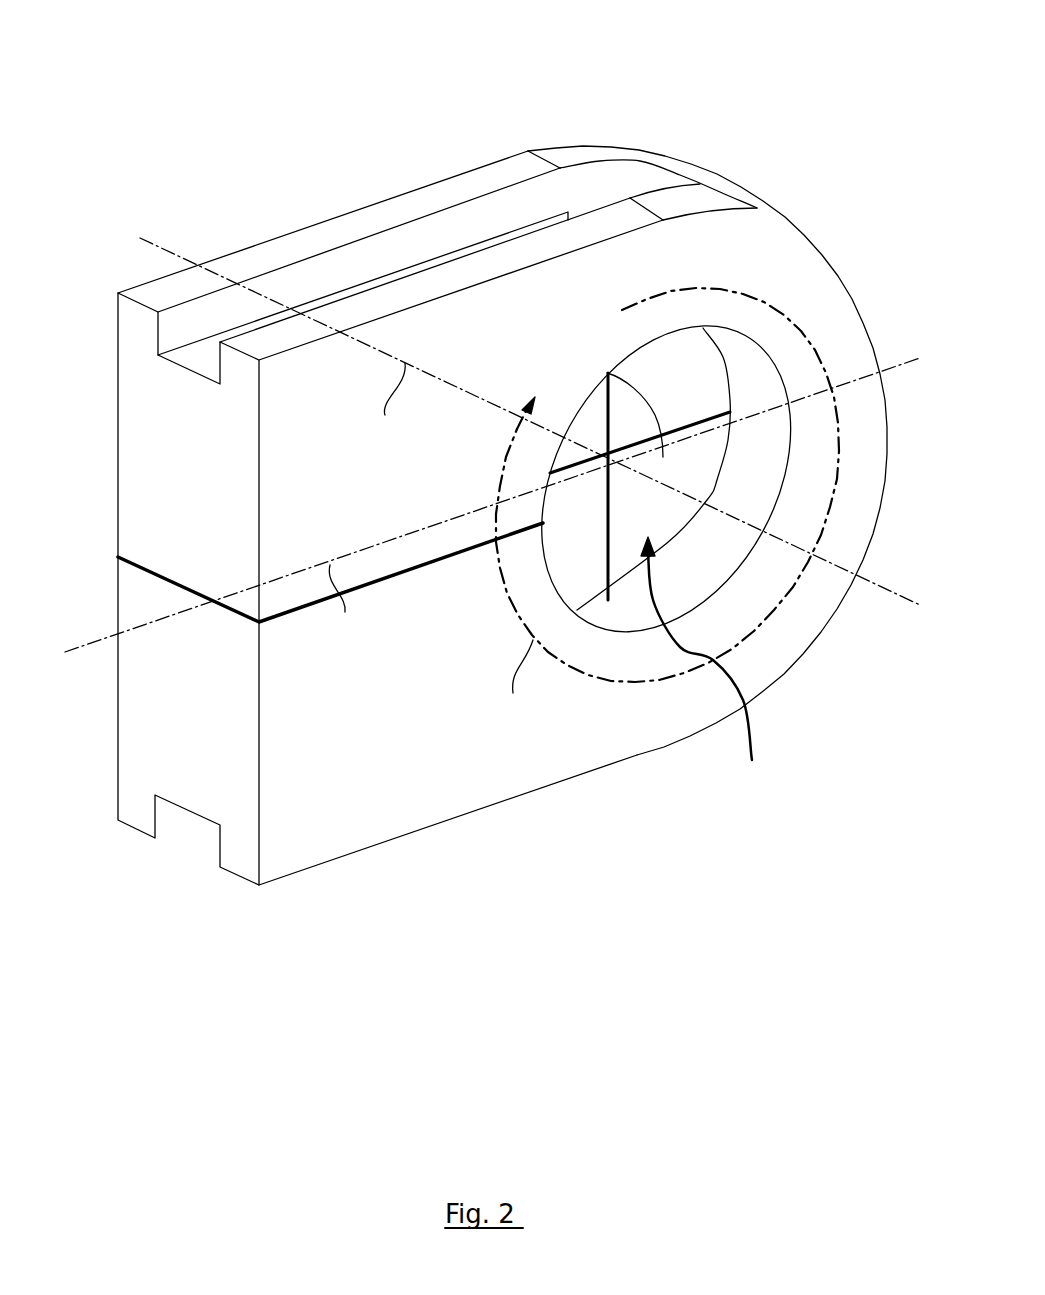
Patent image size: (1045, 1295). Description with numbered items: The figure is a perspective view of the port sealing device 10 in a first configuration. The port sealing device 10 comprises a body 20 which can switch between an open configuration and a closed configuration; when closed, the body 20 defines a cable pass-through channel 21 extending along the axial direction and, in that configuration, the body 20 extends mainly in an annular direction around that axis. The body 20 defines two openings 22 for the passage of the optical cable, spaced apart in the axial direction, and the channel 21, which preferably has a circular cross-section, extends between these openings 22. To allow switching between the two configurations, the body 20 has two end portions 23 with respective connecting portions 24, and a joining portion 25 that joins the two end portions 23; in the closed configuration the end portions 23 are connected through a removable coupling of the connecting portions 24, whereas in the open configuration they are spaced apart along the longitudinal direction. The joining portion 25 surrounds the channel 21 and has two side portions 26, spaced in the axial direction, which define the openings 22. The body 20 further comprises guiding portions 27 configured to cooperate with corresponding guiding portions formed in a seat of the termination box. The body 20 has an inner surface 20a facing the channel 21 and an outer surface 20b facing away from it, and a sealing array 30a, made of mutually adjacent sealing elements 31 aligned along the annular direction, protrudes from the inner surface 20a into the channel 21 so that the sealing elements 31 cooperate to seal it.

The port sealing device 10 is at (310, 154).
The body 20 is at (620, 700).
The inner surface 20a is at (745, 360).
The outer surface 20b is at (713, 200).
The cable pass-through channel 21 is at (733, 547).
The openings 22 is at (772, 393).
The end portions 23 is at (178, 488).
The connecting portions 24 is at (153, 578).
The joining portion 25 is at (790, 250).
The side portions 26 is at (805, 597).
The guiding portions 27 is at (203, 360).
The sealing array 30a is at (711, 670).
The sealing elements 31 is at (582, 507).